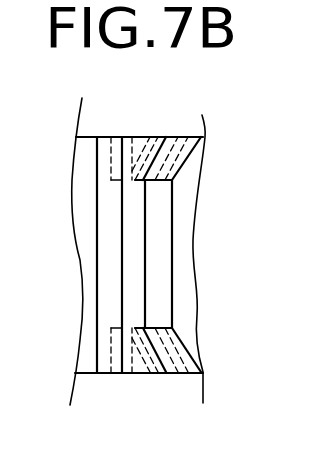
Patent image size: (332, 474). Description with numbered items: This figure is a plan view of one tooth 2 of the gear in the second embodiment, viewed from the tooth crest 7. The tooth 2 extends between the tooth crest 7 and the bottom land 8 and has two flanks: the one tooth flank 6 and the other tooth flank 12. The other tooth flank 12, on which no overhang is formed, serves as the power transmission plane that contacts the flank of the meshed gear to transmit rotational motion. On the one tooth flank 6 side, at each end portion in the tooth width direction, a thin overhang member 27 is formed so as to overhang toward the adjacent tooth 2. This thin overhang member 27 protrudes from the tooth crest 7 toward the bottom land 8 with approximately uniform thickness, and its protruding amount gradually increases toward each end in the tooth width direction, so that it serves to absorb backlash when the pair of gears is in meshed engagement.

The tooth 2 is at (133, 274).
The one tooth flank 6 is at (162, 227).
The tooth crest 7 is at (130, 233).
The bottom land 8 is at (190, 165).
The other tooth flank 12 is at (102, 298).
The thin overhang member 27 is at (179, 135).